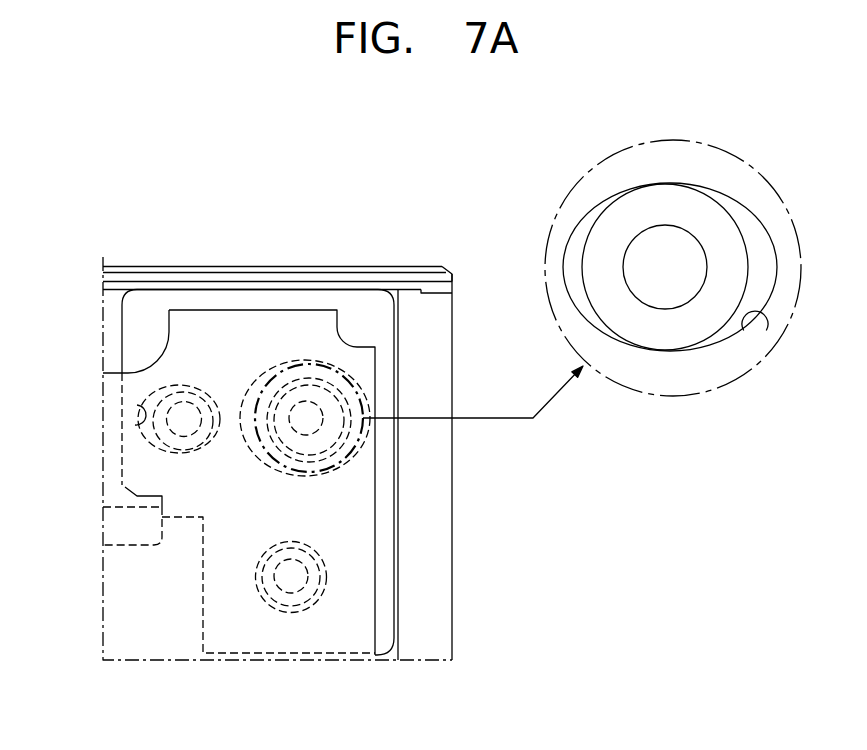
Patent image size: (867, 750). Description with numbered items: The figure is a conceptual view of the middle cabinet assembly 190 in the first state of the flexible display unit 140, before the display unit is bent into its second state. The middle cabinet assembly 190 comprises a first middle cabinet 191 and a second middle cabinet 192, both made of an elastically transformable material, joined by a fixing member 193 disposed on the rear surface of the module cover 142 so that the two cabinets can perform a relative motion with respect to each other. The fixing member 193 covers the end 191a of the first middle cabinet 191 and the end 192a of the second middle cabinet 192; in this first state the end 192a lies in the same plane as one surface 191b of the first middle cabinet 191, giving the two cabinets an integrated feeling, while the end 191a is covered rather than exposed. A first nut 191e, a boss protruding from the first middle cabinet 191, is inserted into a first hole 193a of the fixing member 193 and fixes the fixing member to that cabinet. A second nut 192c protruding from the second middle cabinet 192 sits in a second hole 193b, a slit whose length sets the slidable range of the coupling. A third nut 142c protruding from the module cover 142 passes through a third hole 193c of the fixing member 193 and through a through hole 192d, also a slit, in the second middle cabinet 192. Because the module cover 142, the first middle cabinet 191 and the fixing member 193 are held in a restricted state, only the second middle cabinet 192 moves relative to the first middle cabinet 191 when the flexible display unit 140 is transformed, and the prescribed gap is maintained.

The middle cabinet assembly 190 is at (217, 233).
The flexible display unit 140 is at (108, 602).
The module cover 142 is at (130, 387).
The third nut 142c is at (312, 424).
The first middle cabinet 191 is at (428, 647).
The end of first middle cabinet 191a is at (435, 290).
The one surface of first middle cabinet 191b is at (453, 335).
The first nut 191e is at (291, 585).
The second middle cabinet 192 is at (110, 280).
The end of second middle cabinet 192a is at (454, 279).
The second nut 192c is at (175, 428).
The through hole 192d is at (345, 390).
The fixing member 193 is at (383, 647).
The first hole 193a is at (263, 598).
The second hole 193b is at (133, 423).
The third hole 193c is at (357, 450).